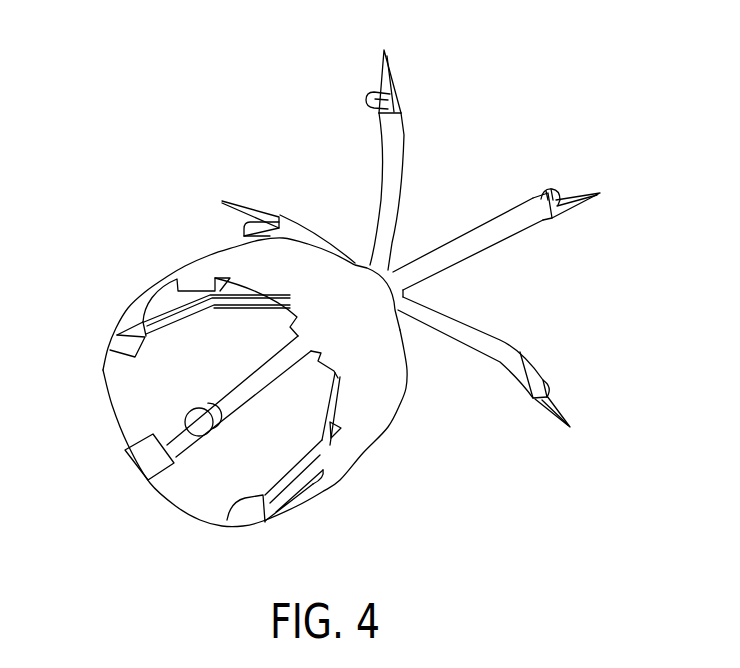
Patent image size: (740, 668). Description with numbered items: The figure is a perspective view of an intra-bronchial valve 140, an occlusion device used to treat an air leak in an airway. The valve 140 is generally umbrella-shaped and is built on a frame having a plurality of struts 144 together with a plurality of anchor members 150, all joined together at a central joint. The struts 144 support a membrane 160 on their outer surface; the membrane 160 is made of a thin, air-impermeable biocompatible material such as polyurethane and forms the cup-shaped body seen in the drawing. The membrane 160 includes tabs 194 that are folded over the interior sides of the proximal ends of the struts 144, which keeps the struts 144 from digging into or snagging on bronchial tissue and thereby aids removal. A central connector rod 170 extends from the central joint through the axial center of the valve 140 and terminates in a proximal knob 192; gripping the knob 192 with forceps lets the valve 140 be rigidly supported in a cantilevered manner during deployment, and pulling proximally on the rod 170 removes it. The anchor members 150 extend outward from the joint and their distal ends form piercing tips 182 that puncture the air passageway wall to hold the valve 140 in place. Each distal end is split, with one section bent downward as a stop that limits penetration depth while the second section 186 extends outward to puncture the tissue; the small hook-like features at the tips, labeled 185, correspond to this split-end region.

The intra-bronchial valve 140 is at (116, 261).
The struts 144 is at (157, 323).
The anchor members 150 is at (392, 195).
The membrane 160 is at (385, 390).
The central connector rod 170 is at (240, 393).
The piercing tips 182 is at (580, 230).
The barbs 185 is at (365, 96).
The second split section 186 is at (390, 62).
The proximal knob 192 is at (196, 406).
The tabs 194 is at (162, 465).